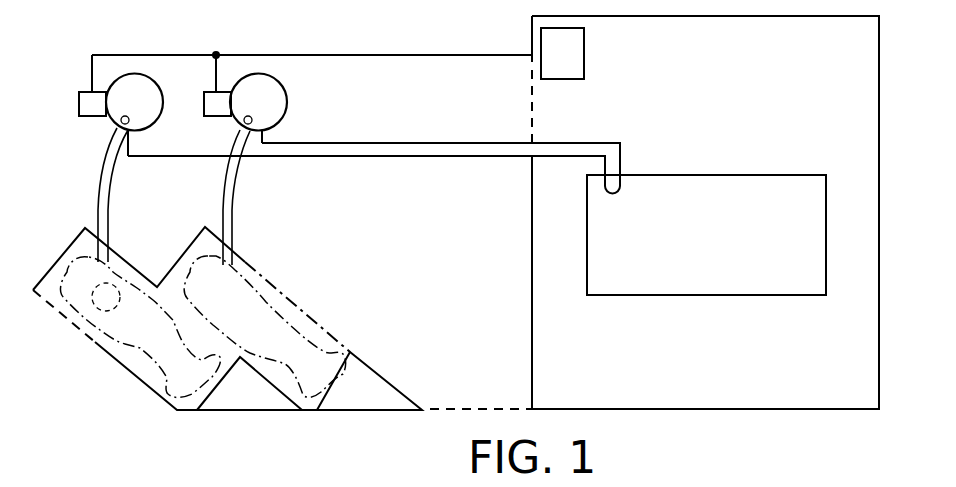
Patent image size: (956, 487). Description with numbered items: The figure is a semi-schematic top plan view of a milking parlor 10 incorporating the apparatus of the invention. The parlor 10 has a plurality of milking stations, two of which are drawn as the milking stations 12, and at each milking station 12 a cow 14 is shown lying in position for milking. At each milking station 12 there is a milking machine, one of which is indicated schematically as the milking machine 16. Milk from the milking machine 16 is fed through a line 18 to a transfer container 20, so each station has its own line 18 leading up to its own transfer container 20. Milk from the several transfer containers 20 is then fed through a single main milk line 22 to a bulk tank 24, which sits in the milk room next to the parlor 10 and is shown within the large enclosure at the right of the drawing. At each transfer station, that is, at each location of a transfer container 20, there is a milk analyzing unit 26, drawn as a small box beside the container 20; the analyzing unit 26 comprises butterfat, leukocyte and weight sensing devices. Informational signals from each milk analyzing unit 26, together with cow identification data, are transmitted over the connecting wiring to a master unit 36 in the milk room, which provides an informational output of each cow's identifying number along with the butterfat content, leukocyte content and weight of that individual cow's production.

The milking parlor 10 is at (350, 412).
The milking station 12 is at (158, 386).
The cow 14 is at (135, 343).
The milking machine 16 is at (110, 292).
The line 18 is at (105, 192).
The transfer container 20 is at (147, 94).
The main milk line 22 is at (445, 157).
The bulk tank 24 is at (757, 254).
The milk analyzing unit 26 is at (92, 117).
The master unit 36 is at (577, 59).